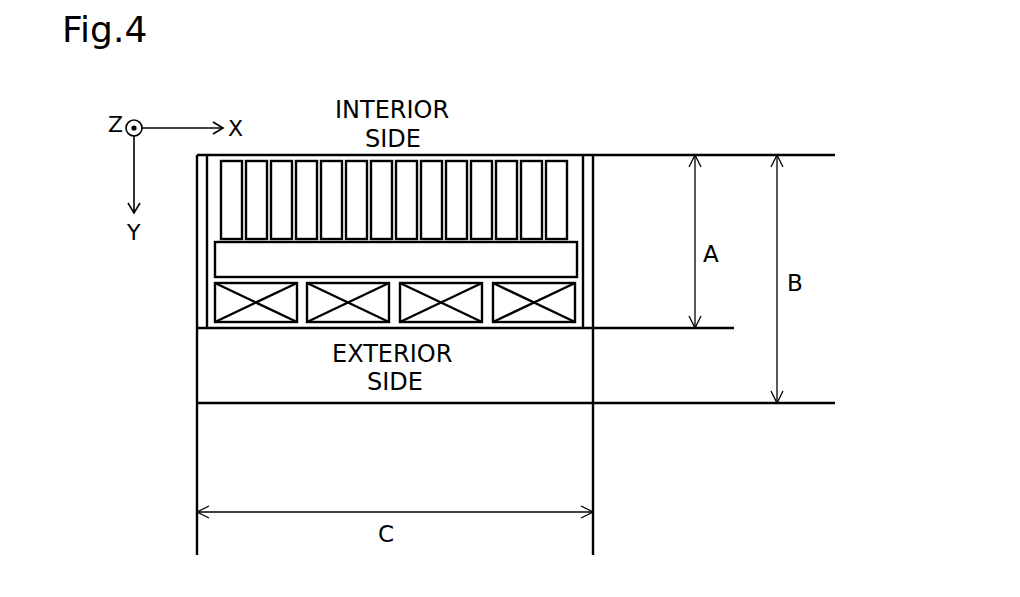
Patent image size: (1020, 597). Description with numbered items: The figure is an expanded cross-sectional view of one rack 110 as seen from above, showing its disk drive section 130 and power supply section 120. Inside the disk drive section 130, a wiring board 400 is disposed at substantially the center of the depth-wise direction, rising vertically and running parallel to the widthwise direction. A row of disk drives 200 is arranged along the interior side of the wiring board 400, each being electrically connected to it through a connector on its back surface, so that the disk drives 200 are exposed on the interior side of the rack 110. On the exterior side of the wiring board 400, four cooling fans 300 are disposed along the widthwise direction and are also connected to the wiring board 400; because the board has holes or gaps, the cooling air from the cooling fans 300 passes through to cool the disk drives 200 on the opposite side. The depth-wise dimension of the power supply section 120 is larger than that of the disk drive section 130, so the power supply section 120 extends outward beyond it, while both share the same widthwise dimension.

The rack 110 is at (307, 130).
The power supply section 120 is at (593, 377).
The disk drive section 130 is at (593, 284).
The disk drive 200 is at (504, 177).
The cooling fan 300 is at (245, 318).
The wiring board 400 is at (225, 263).